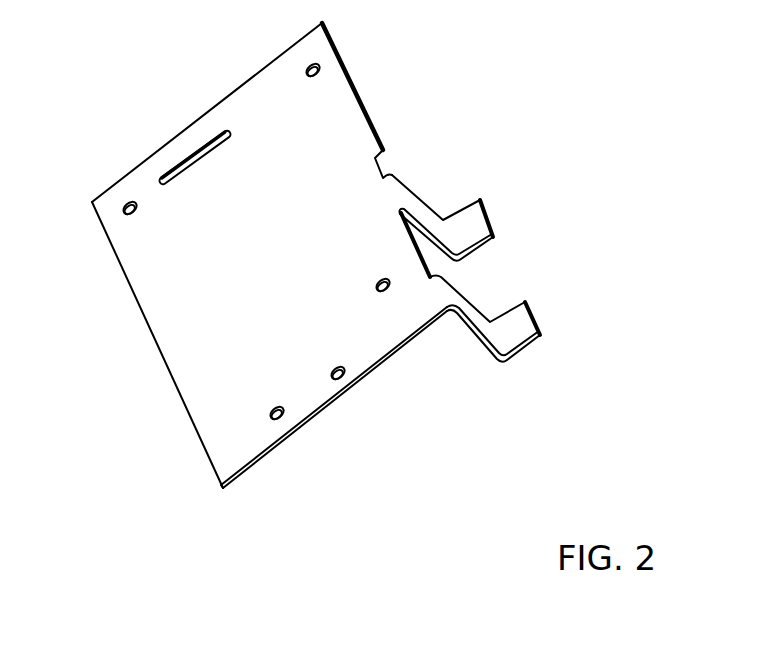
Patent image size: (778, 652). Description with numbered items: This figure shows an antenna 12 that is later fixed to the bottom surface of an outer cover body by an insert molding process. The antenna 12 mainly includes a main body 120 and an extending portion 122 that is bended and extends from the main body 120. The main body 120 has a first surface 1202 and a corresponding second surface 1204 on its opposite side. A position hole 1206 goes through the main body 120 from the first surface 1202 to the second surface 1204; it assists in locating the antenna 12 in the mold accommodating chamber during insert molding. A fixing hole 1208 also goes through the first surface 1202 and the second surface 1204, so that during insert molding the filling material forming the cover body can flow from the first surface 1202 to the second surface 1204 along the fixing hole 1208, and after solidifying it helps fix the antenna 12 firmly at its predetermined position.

The antenna 12 is at (128, 78).
The main body 120 is at (370, 110).
The extending portion 122 is at (510, 332).
The first surface 1202 is at (233, 372).
The second surface 1204 is at (390, 363).
The position hole 1206 is at (282, 417).
The fixing hole 1208 is at (200, 160).